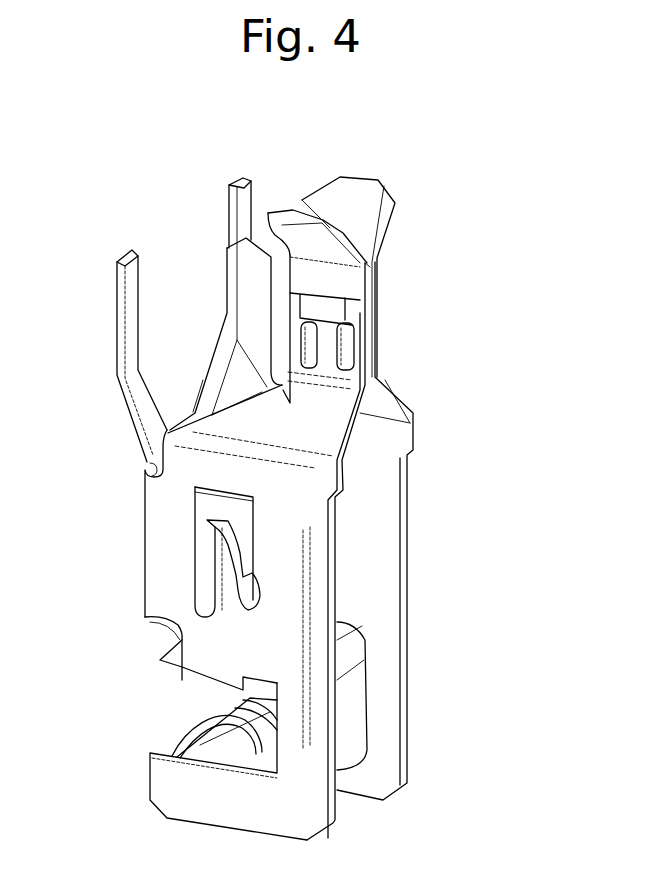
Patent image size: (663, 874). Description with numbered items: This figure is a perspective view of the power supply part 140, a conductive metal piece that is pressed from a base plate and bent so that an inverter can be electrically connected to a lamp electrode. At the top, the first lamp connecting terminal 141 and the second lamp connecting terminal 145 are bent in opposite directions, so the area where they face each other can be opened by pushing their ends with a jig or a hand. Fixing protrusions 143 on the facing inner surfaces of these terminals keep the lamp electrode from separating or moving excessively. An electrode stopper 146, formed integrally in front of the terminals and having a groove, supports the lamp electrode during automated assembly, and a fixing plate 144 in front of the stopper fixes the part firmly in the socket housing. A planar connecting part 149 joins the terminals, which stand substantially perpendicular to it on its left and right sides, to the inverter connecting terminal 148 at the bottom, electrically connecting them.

The power supply part 140 is at (447, 541).
The first lamp connecting terminal 141 is at (360, 192).
The fixing protrusions 143 is at (375, 316).
The fixing plate 144 is at (128, 305).
The second lamp connecting terminal 145 is at (293, 235).
The electrode stopper 146 is at (255, 282).
The inverter connecting terminal 148 is at (220, 722).
The connecting part 149 is at (153, 536).